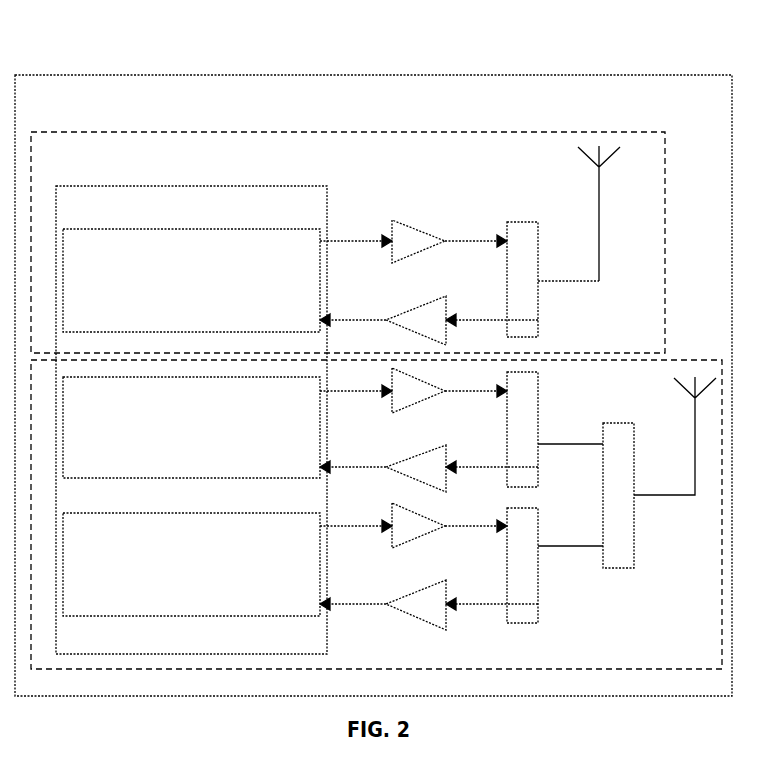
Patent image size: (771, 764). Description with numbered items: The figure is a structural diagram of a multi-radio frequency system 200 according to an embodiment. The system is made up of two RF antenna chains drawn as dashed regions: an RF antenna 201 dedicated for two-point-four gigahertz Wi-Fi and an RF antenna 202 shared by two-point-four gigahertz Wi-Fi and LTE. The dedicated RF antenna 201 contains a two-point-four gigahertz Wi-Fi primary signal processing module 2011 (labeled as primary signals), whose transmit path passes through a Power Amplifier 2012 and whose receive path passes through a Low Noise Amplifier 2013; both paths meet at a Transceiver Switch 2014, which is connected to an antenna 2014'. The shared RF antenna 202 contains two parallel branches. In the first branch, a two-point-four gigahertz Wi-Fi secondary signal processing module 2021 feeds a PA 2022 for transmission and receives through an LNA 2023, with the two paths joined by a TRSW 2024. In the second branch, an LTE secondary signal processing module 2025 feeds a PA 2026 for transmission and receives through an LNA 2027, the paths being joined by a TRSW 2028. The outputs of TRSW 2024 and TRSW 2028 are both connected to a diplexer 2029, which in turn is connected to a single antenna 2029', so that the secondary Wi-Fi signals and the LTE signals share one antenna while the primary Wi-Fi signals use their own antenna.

The multi-radio frequency system 200 is at (383, 74).
The RF antenna dedicated for 2.4 GHz Wi-Fi 201 is at (266, 132).
The RF antenna shared by 2.4 GHz Wi-Fi and LTE 202 is at (670, 358).
The 2.4 GHz Wi-Fi primary signal processing module 2011 is at (208, 229).
The Power Amplifier 2012 is at (416, 230).
The Low Noise Amplifier 2013 is at (408, 308).
The Transceiver Switch 2014 is at (531, 260).
The antenna 2014' is at (618, 213).
The 2.4 GHz Wi-Fi secondary signal processing module 2021 is at (195, 480).
The PA 2022 is at (443, 371).
The LNA 2023 is at (408, 458).
The TRSW 2024 is at (538, 404).
The LTE secondary signal processing module 2025 is at (195, 618).
The PA 2026 is at (438, 504).
The LNA 2027 is at (408, 595).
The TRSW 2028 is at (538, 598).
The diplexer 2029 is at (649, 495).
The antenna 2029' is at (675, 436).